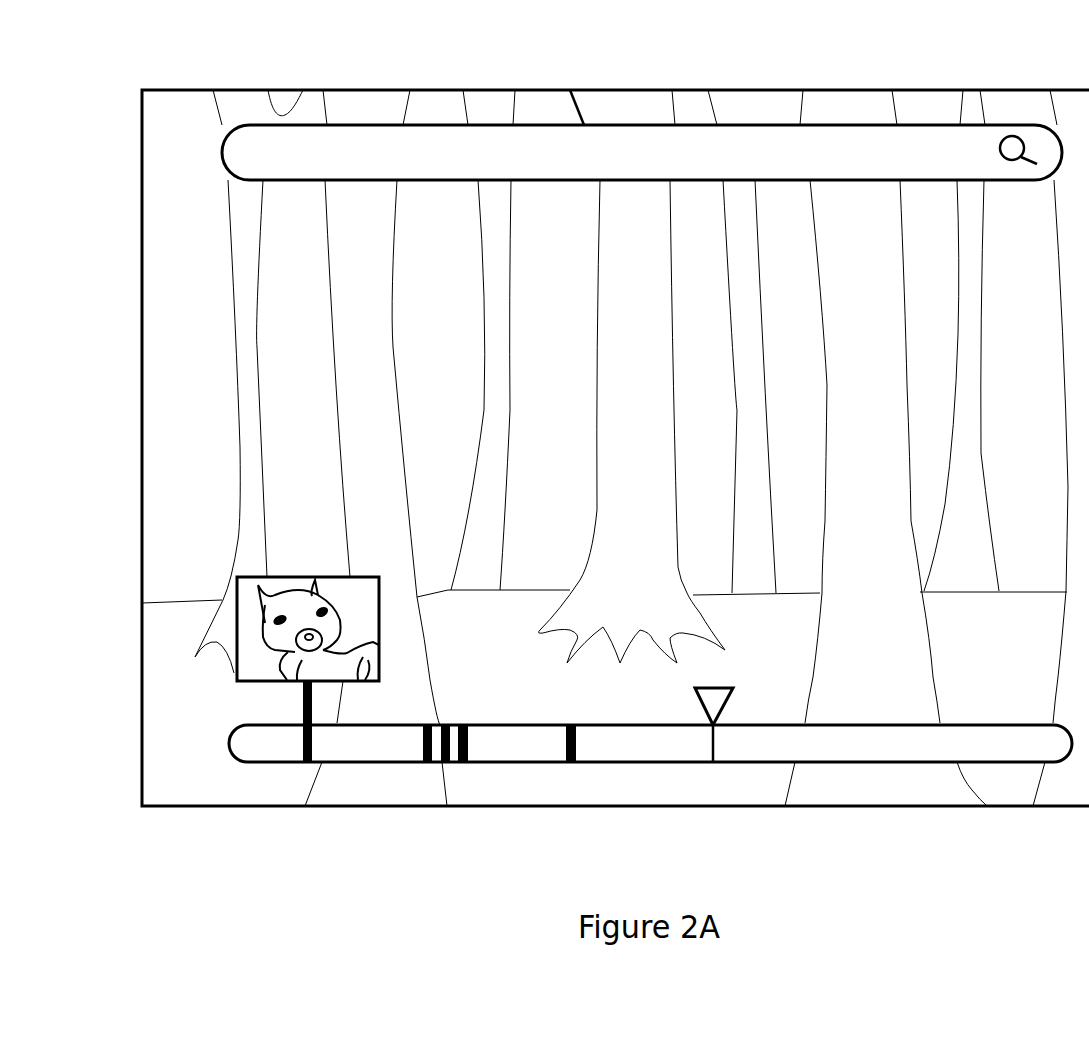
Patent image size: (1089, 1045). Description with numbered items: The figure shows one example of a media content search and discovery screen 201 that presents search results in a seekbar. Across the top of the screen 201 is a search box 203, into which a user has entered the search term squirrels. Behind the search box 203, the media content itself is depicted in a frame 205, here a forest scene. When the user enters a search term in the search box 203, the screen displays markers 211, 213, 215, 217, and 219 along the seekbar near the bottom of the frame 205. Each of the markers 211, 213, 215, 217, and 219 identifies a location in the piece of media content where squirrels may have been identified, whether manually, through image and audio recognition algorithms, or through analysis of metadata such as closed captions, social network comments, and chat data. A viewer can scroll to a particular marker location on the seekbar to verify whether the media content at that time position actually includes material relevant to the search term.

The search and discovery screen 201 is at (140, 178).
The search box 203 is at (838, 145).
The frame 205 is at (160, 644).
The marker 211 is at (305, 762).
The marker 213 is at (426, 762).
The marker 215 is at (444, 762).
The marker 217 is at (463, 762).
The marker 219 is at (573, 762).